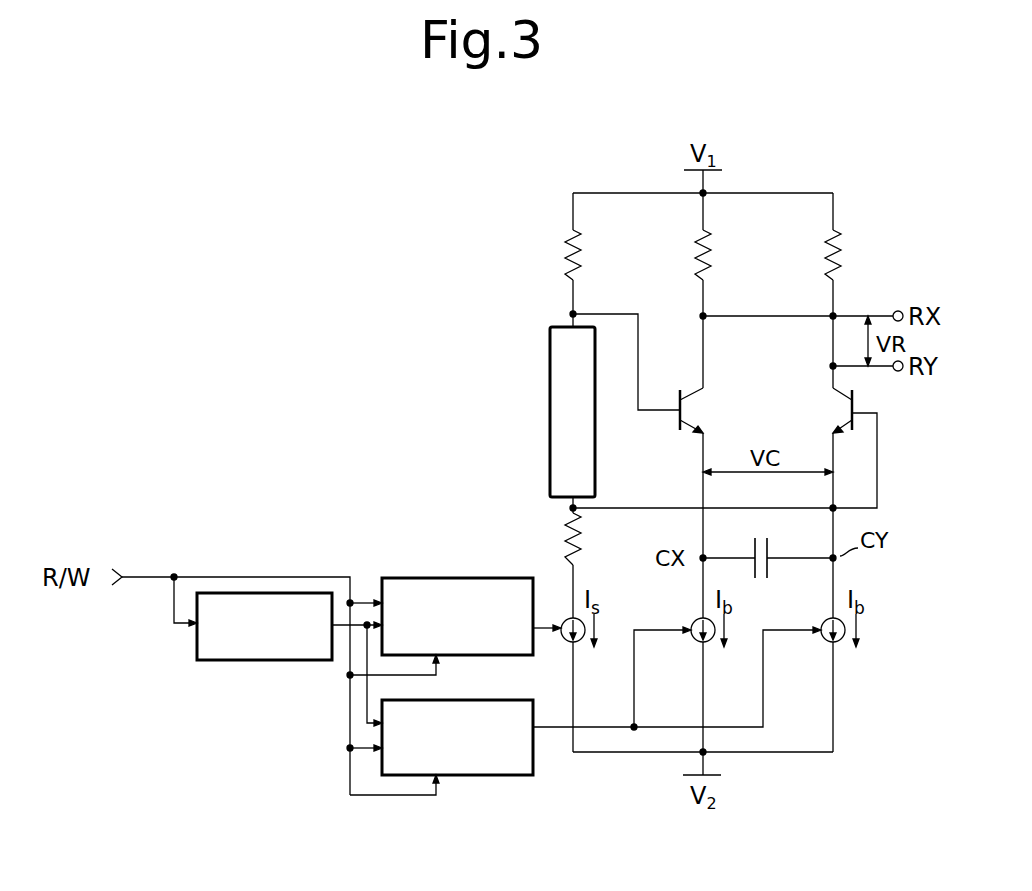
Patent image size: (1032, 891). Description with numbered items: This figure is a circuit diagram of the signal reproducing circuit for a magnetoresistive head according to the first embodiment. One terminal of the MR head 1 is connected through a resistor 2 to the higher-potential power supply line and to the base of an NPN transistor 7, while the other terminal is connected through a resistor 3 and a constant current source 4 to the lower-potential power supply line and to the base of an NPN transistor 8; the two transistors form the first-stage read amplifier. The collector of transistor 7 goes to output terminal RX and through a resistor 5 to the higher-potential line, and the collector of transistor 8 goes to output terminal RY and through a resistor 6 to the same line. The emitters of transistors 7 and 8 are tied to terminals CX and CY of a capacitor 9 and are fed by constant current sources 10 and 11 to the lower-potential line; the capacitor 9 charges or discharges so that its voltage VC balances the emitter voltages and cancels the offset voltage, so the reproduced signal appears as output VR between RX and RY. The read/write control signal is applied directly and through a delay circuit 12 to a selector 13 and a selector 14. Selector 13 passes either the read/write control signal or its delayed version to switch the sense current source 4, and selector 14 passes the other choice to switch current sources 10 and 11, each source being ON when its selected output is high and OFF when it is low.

The MR head 1 is at (548, 418).
The resistor 2 is at (566, 244).
The resistor 3 is at (566, 540).
The constant current source 4 is at (562, 644).
The resistor 5 is at (697, 246).
The resistor 6 is at (826, 246).
The NPN transistor 7 is at (712, 408).
The NPN transistor 8 is at (838, 408).
The capacitor 9 is at (775, 542).
The constant current source 10 is at (691, 618).
The constant current source 11 is at (822, 644).
The delay circuit 12 is at (268, 662).
The selector 13 is at (430, 577).
The selector 14 is at (488, 776).